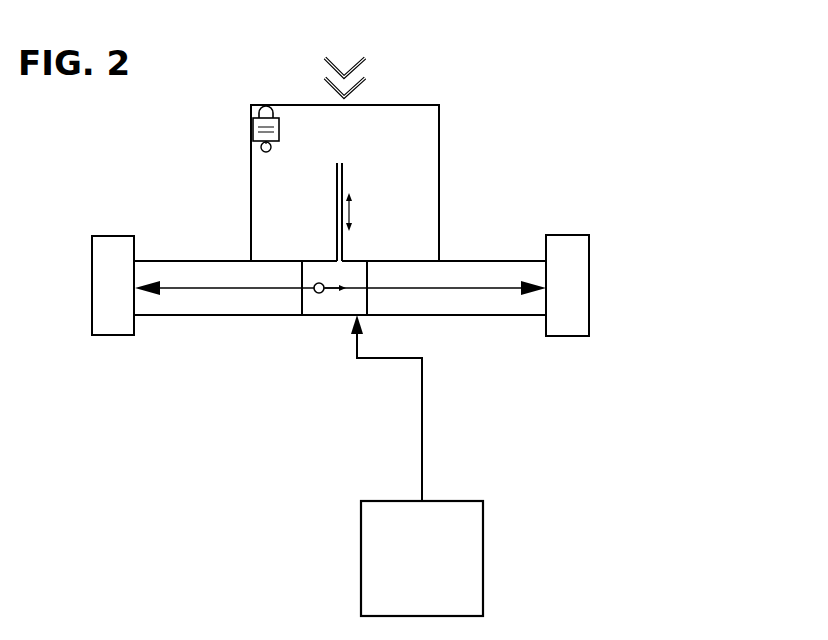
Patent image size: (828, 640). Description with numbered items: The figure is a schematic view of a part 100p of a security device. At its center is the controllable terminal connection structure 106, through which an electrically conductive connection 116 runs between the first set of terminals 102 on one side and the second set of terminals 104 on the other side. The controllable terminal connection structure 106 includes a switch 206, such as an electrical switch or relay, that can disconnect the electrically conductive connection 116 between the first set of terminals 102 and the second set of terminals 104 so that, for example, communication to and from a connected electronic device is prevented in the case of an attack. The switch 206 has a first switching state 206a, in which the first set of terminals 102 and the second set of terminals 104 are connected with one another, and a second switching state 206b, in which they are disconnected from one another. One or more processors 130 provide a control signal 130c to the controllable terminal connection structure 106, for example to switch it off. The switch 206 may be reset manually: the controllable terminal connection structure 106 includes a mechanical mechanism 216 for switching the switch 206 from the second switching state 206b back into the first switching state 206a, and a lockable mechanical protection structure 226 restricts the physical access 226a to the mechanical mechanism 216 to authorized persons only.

The part of a security device 100p is at (503, 72).
The first set of terminals 102 is at (100, 258).
The second set of terminals 104 is at (577, 262).
The controllable terminal connection structure 106 is at (471, 245).
The electrically conductive connection 116 is at (196, 287).
The one or more processors 130 is at (448, 496).
The control signal 130c is at (420, 393).
The switch 206 is at (359, 256).
The first switching state 206a is at (331, 301).
The second switching state 206b is at (326, 265).
The mechanical mechanism 216 is at (351, 177).
The lockable mechanical protection structure 226 is at (274, 103).
The physical access 226a is at (358, 56).